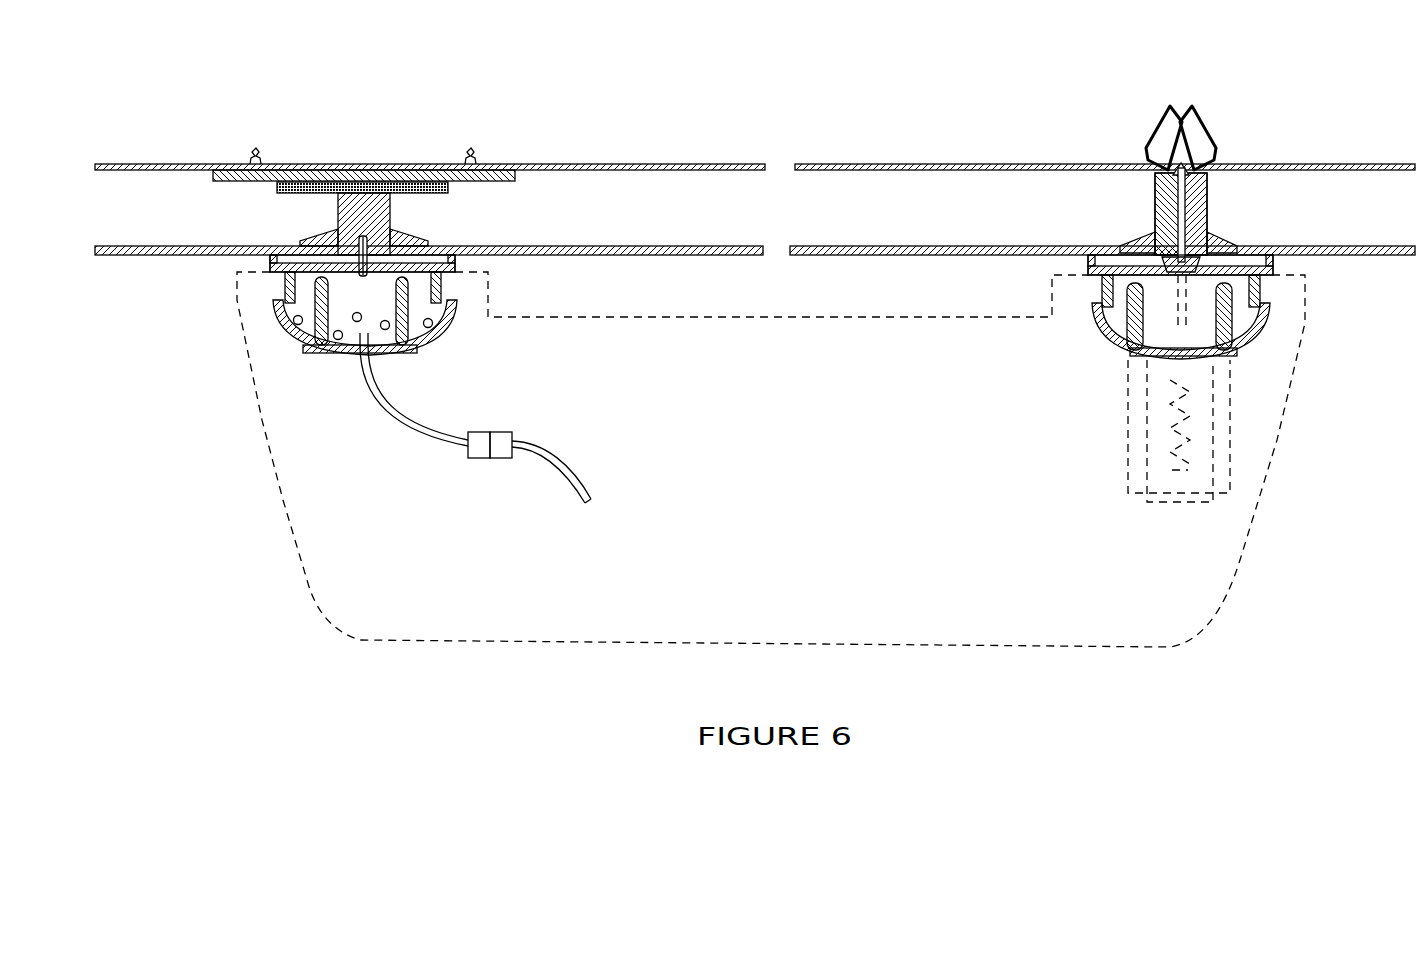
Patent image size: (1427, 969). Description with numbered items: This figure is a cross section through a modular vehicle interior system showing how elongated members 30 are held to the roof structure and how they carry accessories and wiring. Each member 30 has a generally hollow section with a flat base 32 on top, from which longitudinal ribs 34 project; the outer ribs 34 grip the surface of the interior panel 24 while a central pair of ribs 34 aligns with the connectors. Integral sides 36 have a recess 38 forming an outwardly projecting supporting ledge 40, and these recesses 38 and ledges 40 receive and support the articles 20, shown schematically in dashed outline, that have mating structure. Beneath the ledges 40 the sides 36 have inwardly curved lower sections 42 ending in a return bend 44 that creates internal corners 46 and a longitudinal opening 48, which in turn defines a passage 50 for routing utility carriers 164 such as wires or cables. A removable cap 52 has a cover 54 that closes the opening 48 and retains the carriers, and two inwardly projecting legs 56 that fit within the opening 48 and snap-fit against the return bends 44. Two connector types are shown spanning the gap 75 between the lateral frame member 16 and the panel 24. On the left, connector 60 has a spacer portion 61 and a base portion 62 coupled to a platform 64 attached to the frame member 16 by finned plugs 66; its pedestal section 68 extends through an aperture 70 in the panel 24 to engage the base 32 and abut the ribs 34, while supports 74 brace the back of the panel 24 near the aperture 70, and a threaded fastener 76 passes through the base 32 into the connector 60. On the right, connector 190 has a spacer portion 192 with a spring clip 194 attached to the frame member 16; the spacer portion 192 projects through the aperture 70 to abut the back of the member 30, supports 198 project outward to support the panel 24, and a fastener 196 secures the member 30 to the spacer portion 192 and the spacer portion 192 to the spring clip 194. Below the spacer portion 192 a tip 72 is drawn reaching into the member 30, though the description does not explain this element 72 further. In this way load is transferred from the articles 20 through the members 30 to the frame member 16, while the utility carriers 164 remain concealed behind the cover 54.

The lateral frame member 16 is at (598, 164).
The article 20 is at (283, 508).
The interior panel 24 is at (695, 246).
The member 30 is at (778, 388).
The base 32 is at (456, 255).
The longitudinal ribs 34 is at (278, 257).
The sides 36 is at (268, 330).
The recess 38 is at (287, 290).
The supporting ledge 40 is at (276, 320).
The inwardly curved lower sections 42 is at (291, 353).
The return bend 44 is at (414, 308).
The internal corners 46 is at (318, 352).
The longitudinal opening 48 is at (1160, 368).
The passage 50 is at (1158, 335).
The removable cap 52 is at (395, 356).
The cover 54 is at (771, 449).
The inwardly projecting legs 56 is at (393, 297).
The connector 60 is at (388, 169).
The spacer portion 61 is at (392, 212).
The base portion 62 is at (283, 191).
The platform 64 is at (515, 181).
The finned plugs 66 is at (257, 150).
The pedestal section 68 is at (430, 240).
The aperture 70 is at (1200, 260).
The pin projection 72 is at (1198, 278).
The supports 74 is at (323, 232).
The gap 75 is at (183, 207).
The threaded fastener 76 is at (363, 234).
The utility carrier 164 is at (553, 456).
The connector 190 is at (1184, 187).
The spacer portion 192 is at (1152, 222).
The spring clip 194 is at (1193, 107).
The fastener 196 is at (1172, 195).
The supports 198 is at (1215, 230).